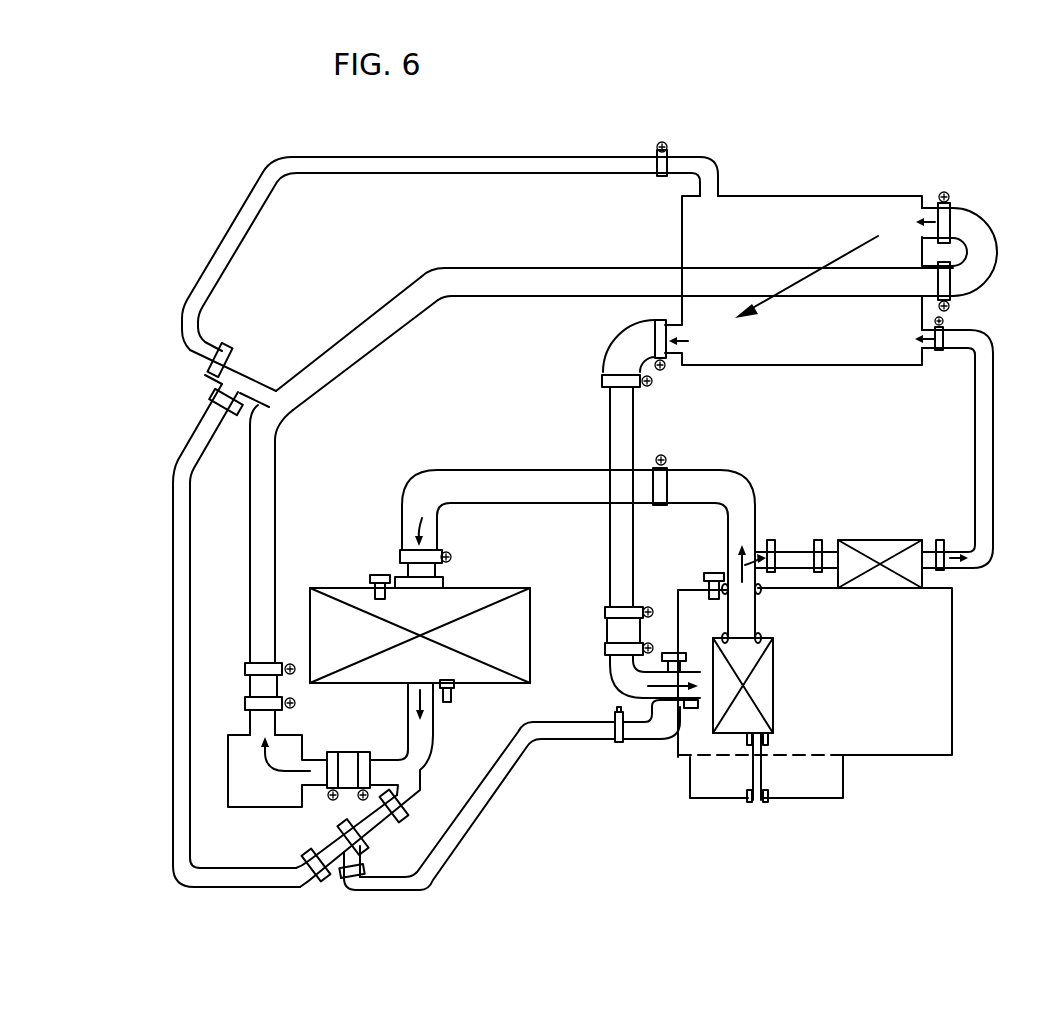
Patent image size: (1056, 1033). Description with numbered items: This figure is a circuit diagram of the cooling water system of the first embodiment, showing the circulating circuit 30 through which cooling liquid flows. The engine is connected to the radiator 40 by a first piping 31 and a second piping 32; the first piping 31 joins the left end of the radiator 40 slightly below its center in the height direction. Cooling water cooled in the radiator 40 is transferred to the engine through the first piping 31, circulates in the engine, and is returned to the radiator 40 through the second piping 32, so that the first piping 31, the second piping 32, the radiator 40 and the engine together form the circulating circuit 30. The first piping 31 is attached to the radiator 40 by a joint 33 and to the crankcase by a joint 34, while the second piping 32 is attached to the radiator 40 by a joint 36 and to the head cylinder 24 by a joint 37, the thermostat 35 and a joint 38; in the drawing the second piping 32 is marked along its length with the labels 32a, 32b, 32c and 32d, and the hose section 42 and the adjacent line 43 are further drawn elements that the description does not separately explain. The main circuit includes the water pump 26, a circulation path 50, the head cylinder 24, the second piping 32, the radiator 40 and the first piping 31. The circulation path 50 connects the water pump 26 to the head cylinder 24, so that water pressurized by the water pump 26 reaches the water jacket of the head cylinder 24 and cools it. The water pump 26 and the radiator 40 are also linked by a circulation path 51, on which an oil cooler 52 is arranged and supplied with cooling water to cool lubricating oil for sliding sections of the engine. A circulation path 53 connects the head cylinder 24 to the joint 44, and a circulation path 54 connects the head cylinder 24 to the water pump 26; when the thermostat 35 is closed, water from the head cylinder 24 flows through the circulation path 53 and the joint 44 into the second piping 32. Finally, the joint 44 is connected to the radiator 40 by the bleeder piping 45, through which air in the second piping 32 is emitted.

The head cylinder 24 is at (532, 635).
The water pump 26 is at (775, 687).
The circulating circuit 30 is at (320, 432).
The first piping 31 is at (645, 425).
The second piping 32 is at (574, 444).
The horizontal portion of second pipe 32a is at (626, 253).
The inclined portion of second pipe 32b is at (345, 322).
The vertical portion of second pipe 32c is at (277, 552).
The bent portion of second pipe 32d is at (281, 433).
The joint 33 is at (604, 350).
The joint 34 is at (605, 622).
The thermostat 35 is at (295, 733).
The joint 36 is at (984, 223).
The joint 37 is at (245, 680).
The joint 38 is at (348, 752).
The radiator 40 is at (833, 196).
The hose 42 is at (513, 266).
The inner pipe 43 is at (250, 530).
The joint 44 is at (255, 389).
The bleeder piping 45 is at (383, 157).
The circulation path 50 is at (536, 458).
The circulation path 51 is at (995, 450).
The oil cooler 52 is at (875, 540).
The circulation path 53 is at (173, 612).
The circulation path 54 is at (481, 810).